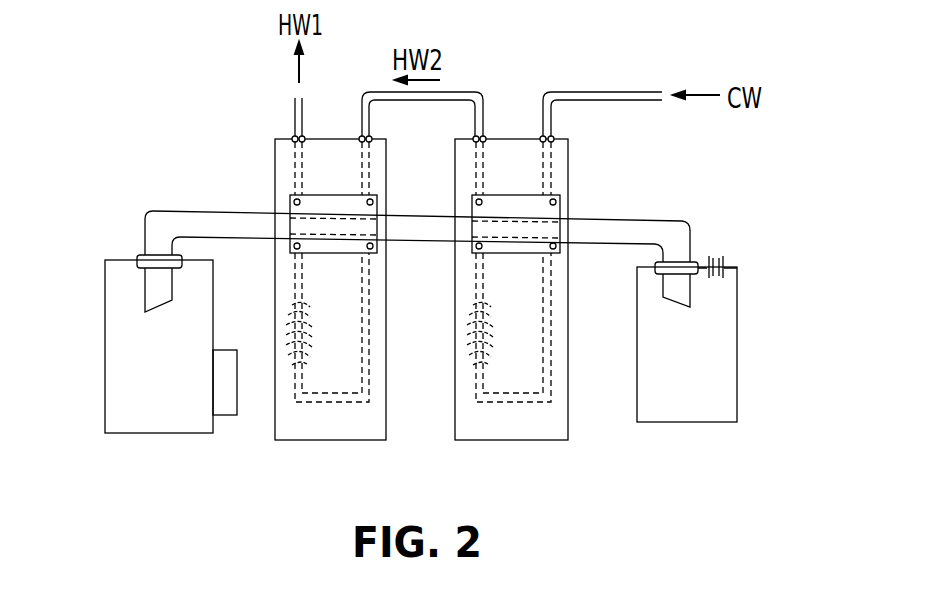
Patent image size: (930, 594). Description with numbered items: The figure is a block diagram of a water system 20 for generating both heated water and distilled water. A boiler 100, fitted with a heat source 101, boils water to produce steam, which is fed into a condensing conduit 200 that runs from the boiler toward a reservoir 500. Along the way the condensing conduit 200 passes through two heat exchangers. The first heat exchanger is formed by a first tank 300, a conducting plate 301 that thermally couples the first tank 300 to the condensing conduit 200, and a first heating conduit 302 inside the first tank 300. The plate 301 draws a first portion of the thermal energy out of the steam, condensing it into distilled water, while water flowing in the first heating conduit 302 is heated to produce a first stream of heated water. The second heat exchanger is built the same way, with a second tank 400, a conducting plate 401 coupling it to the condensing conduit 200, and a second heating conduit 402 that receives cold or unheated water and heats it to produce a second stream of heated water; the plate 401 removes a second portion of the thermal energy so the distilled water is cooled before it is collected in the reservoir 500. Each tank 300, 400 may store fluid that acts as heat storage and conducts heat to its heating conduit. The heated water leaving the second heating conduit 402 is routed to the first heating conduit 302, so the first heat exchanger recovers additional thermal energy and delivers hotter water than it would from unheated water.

The water system 20 is at (126, 77).
The boiler 100 is at (105, 362).
The heat source 101 is at (221, 415).
The condensing conduit 200 is at (170, 210).
The first tank 300 is at (275, 170).
The conducting plate 301 is at (290, 247).
The first heating conduit 302 is at (335, 402).
The second tank 400 is at (568, 175).
The conducting plate 401 is at (560, 253).
The second heating conduit 402 is at (507, 402).
The reservoir 500 is at (737, 372).